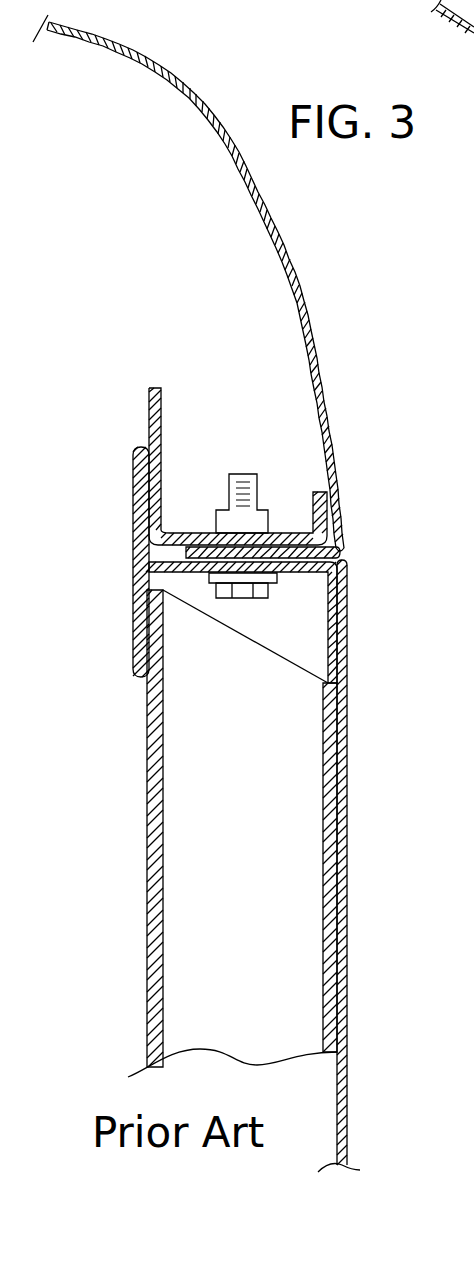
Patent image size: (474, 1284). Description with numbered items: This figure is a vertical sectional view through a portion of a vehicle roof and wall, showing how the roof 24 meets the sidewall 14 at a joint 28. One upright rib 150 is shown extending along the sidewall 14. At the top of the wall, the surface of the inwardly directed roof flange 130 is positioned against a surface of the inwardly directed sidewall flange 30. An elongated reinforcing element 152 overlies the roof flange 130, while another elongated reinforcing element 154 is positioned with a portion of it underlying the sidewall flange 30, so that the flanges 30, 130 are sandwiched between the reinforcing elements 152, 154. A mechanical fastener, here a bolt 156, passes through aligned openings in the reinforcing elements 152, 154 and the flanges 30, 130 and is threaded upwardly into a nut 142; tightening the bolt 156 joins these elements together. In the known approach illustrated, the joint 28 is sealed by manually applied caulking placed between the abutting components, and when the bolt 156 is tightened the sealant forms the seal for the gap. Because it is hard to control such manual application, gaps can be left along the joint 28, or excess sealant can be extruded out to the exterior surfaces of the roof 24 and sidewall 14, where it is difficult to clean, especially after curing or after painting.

The sidewall 14 is at (348, 828).
The roof 24 is at (280, 248).
The joint 28 is at (349, 553).
The sidewall flange 30 is at (293, 568).
The roof flange 130 is at (280, 527).
The nut 142 is at (222, 510).
The upright rib 150 is at (187, 903).
The reinforcing element 152 is at (148, 402).
The reinforcing element 154 is at (133, 566).
The bolt 156 is at (243, 598).